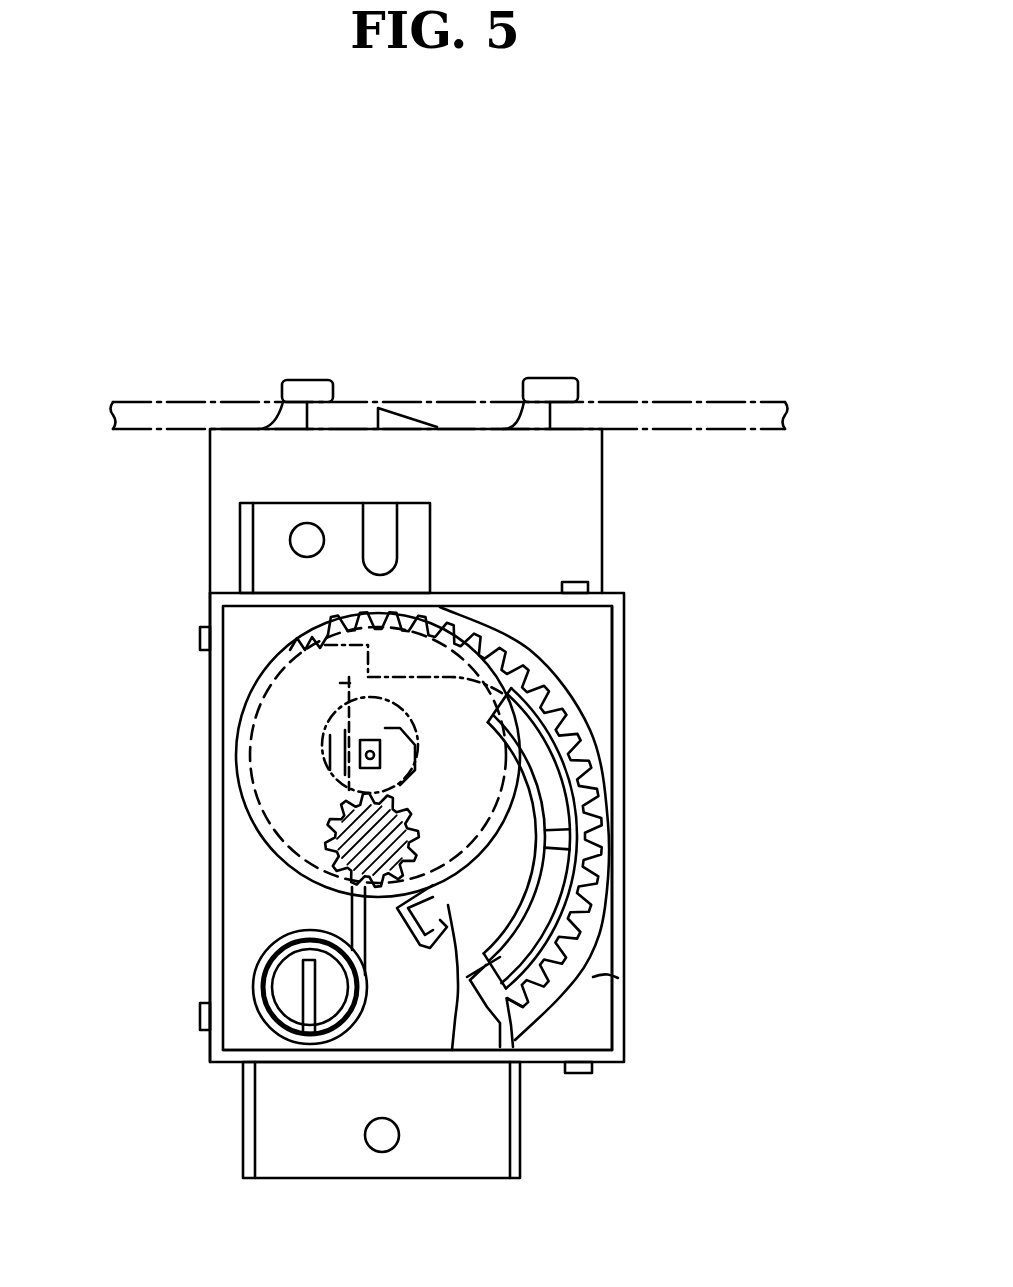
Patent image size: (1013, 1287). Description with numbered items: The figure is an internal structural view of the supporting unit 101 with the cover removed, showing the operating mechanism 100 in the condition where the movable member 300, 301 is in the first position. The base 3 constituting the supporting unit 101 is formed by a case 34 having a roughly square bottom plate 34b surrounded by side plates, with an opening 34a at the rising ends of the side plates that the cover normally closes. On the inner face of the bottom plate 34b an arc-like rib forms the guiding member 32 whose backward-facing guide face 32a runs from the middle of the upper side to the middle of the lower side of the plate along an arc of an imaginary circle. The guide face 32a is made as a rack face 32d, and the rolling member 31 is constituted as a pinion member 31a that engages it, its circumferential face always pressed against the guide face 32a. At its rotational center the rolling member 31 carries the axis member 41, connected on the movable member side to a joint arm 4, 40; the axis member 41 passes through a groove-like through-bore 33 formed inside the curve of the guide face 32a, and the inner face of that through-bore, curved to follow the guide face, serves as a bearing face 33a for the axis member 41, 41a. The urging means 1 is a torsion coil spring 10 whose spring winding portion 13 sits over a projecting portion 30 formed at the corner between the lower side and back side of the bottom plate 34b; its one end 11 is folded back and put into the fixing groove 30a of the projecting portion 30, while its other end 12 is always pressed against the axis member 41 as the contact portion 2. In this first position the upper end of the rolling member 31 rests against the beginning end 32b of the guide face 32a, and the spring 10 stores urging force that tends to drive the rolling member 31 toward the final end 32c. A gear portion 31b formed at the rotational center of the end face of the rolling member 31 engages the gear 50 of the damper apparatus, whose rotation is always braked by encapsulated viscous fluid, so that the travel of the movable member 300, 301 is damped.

The urging means 1 is at (230, 980).
The torsion coil spring 10 is at (270, 942).
The one end 11 is at (307, 978).
The other end 12 is at (345, 688).
The spring winding portion 13 is at (257, 1007).
The contact portion 2 is at (381, 755).
The axis member 41 is at (493, 688).
The motor shaft coupling 41a is at (317, 743).
The base 3 is at (624, 913).
The case 4 is at (493, 485).
The joint arm 40 is at (563, 472).
The projecting portion 30 is at (349, 1098).
The fixing groove 30a is at (292, 1015).
The rolling member 31 is at (487, 771).
The pinion member 31a is at (428, 622).
The gear portion 31b is at (397, 767).
The guiding member 32 is at (577, 767).
The guide face 32a is at (631, 838).
The beginning end 32b is at (340, 613).
The final end 32c is at (525, 1015).
The rack face 32d is at (590, 820).
The groove-like through-bore 33 is at (452, 1050).
The bearing face 33a is at (407, 933).
The case 34 is at (590, 1023).
The opening 34a is at (623, 1065).
The bottom plate 34b is at (618, 978).
The gear 50 is at (345, 852).
The operating mechanism 100 is at (122, 870).
The supporting unit 101 is at (206, 1067).
The movable member 300 is at (502, 365).
The rail member 301 is at (710, 415).